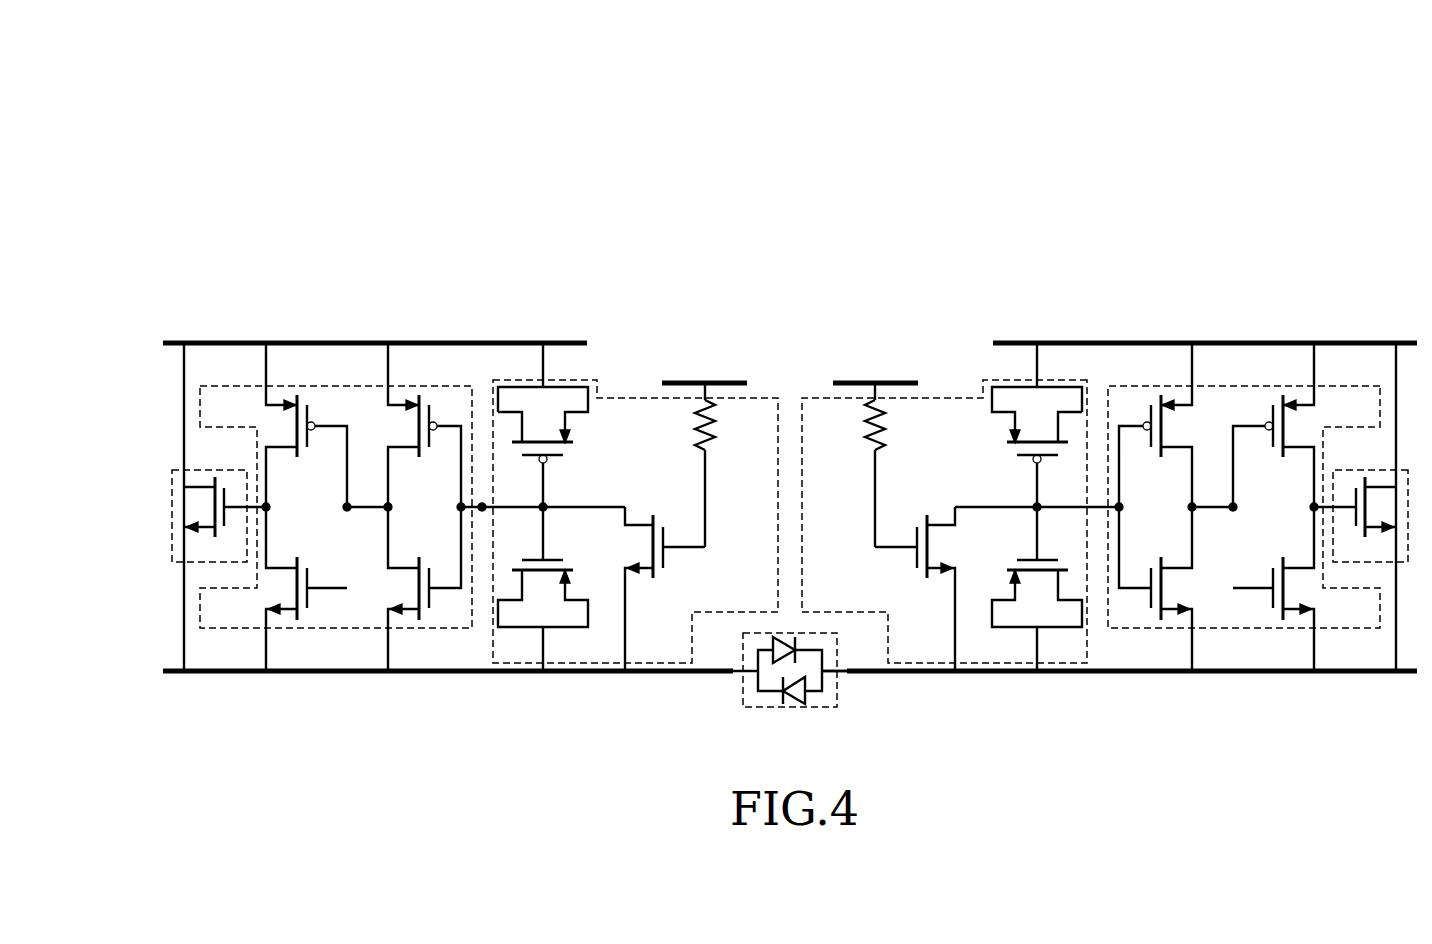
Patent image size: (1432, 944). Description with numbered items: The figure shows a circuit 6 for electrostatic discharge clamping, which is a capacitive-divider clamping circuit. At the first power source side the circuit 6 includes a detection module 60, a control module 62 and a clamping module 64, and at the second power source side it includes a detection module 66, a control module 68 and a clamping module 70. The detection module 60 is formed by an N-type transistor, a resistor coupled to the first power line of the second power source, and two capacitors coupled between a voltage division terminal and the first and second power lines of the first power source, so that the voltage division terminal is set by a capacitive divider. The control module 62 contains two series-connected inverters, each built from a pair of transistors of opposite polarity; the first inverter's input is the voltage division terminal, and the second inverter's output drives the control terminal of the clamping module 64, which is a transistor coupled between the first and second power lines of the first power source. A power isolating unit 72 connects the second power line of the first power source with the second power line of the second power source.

The circuit 6 is at (777, 506).
The detection module 60 is at (650, 380).
The control module 62 is at (327, 387).
The clamping module 64 is at (230, 470).
The detection module 66 is at (931, 380).
The control module 68 is at (1255, 386).
The clamping module 70 is at (1351, 451).
The power isolating unit 72 is at (758, 708).